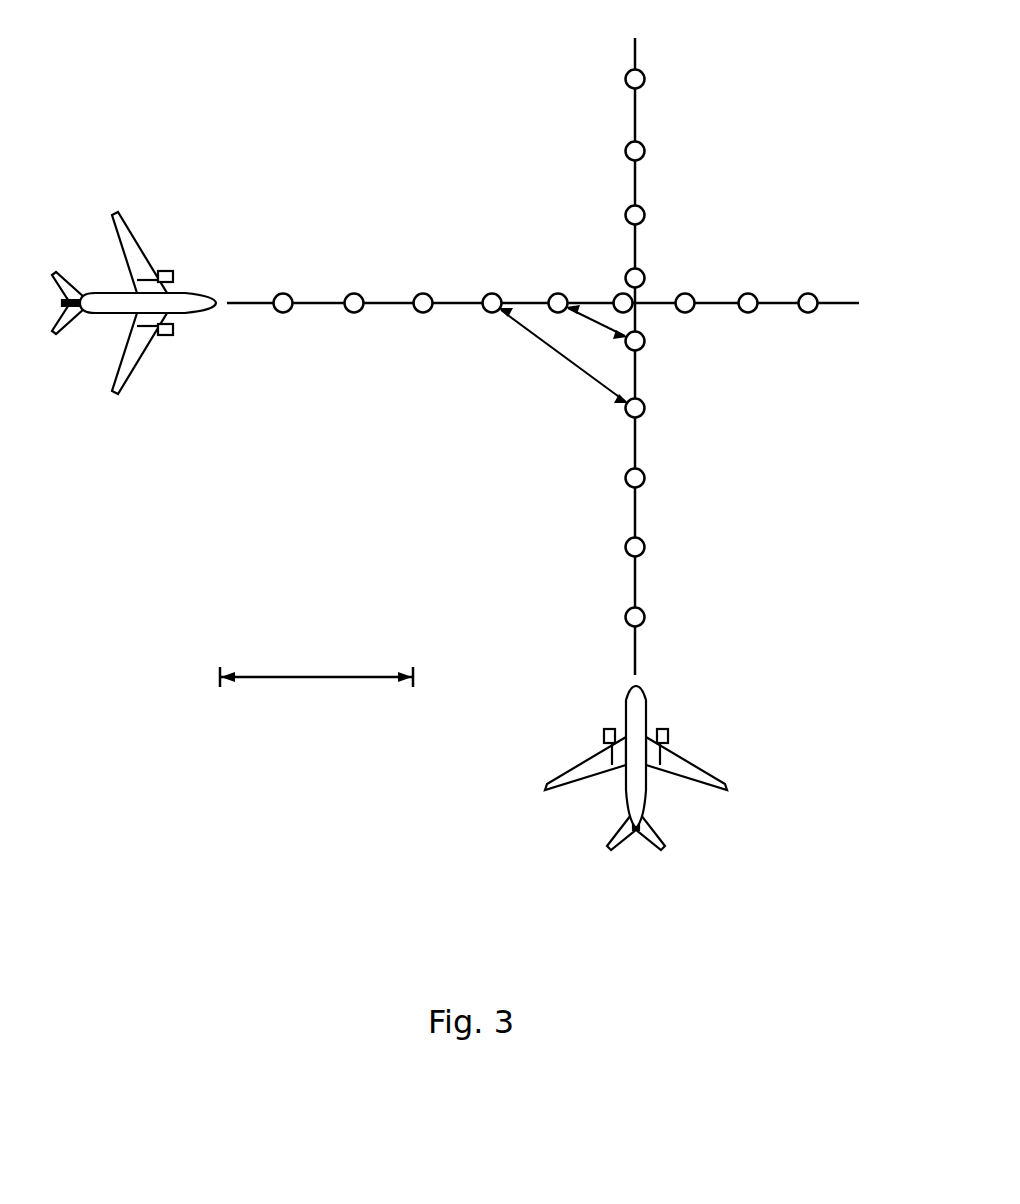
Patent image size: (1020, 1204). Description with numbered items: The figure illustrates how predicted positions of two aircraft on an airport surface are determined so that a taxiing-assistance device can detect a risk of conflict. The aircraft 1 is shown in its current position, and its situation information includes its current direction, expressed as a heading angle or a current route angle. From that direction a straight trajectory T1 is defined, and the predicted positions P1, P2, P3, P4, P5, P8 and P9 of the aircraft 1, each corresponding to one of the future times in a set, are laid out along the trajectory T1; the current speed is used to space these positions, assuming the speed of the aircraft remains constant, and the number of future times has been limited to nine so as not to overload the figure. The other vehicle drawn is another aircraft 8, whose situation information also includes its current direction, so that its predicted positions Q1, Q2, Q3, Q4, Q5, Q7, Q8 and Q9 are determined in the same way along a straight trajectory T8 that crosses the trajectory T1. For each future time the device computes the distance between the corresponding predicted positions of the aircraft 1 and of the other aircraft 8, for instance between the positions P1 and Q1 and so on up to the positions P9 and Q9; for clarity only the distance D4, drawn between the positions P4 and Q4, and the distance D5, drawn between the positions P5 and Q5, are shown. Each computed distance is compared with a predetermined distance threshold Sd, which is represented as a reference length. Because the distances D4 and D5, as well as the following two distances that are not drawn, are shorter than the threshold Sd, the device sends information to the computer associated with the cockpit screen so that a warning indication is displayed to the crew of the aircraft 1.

The aircraft 1 is at (646, 798).
The other aircraft 8 is at (137, 370).
The straight trajectory T1 is at (633, 52).
The straight trajectory T8 is at (842, 306).
The predicted position P1 is at (668, 617).
The predicted position P2 is at (668, 547).
The predicted position P3 is at (668, 478).
The predicted position P4 is at (668, 408).
The predicted position P5 is at (668, 341).
The predicted position P8 is at (668, 151).
The predicted position P9 is at (668, 79).
The predicted position Q1 is at (283, 278).
The predicted position Q2 is at (354, 278).
The predicted position Q3 is at (423, 278).
The predicted position Q4 is at (492, 278).
The predicted position Q5 is at (558, 278).
The predicted position Q7 is at (685, 278).
The predicted position Q8 is at (748, 278).
The predicted position Q9 is at (808, 278).
The distance D4 is at (595, 376).
The distance D5 is at (574, 325).
The predetermined distance threshold Sd is at (345, 680).